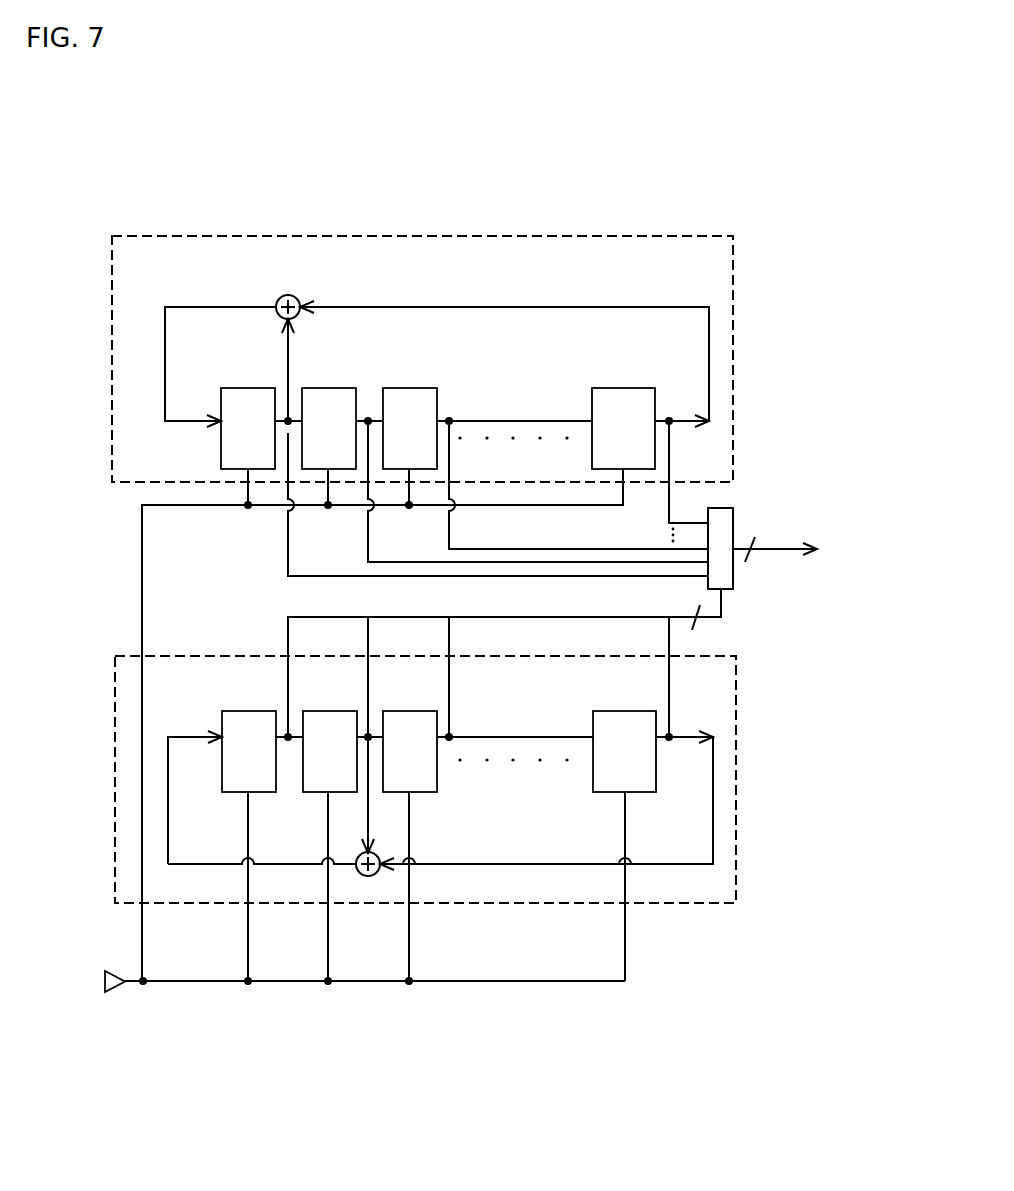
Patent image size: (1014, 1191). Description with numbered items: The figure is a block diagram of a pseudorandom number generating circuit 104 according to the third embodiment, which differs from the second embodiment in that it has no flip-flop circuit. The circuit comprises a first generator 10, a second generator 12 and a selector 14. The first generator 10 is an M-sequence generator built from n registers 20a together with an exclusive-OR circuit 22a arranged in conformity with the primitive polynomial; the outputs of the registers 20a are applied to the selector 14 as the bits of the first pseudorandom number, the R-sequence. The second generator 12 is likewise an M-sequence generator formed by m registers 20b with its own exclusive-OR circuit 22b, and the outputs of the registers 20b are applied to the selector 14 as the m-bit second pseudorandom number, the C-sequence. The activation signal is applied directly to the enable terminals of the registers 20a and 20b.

The pseudorandom number generating circuit 104 is at (770, 236).
The first generator 10 is at (733, 285).
The second generator 12 is at (736, 728).
The selector 14 is at (734, 508).
The registers 20a is at (264, 387).
The registers 20b is at (243, 710).
The exclusive-OR circuit 22a is at (289, 294).
The exclusive-OR circuit 22b is at (380, 853).